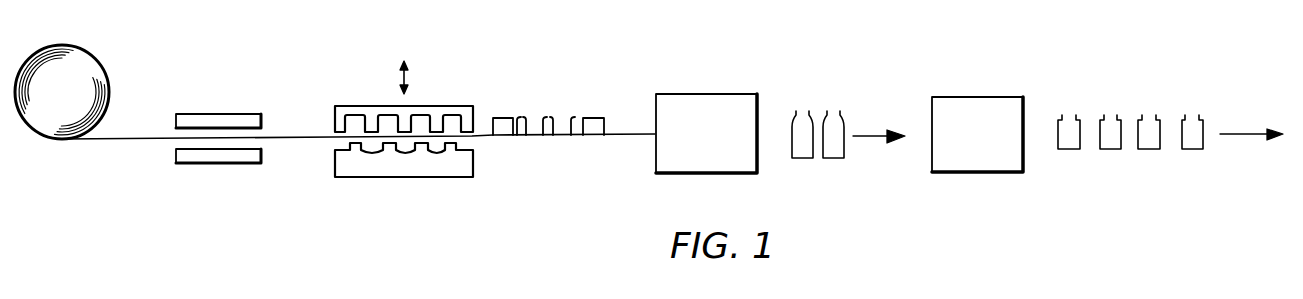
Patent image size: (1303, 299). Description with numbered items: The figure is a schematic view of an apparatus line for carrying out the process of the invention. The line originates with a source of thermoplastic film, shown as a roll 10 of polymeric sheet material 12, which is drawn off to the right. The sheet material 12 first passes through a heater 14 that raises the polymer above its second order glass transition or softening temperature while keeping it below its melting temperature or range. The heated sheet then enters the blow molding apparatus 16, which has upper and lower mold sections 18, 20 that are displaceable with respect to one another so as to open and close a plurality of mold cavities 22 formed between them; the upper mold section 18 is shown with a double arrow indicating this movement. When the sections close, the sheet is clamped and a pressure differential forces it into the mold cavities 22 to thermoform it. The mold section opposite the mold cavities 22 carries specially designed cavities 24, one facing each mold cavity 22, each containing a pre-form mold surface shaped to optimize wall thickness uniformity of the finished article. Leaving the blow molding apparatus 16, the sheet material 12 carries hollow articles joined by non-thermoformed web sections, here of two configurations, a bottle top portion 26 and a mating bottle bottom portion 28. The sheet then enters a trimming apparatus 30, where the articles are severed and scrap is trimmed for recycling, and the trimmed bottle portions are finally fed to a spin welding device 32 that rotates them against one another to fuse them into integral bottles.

The roll 10 is at (82, 65).
The polymeric sheet material 12 is at (117, 137).
The heater 14 is at (235, 115).
The blow molding apparatus 16 is at (406, 131).
The upper mold section 18 is at (340, 112).
The lower mold section 20 is at (368, 170).
The mold cavities 22 is at (420, 124).
The specially designed cavities 24 is at (419, 144).
The bottle top portion 26 is at (545, 117).
The bottle bottom portion 28 is at (517, 118).
The trimming apparatus 30 is at (707, 94).
The spin welding device 32 is at (995, 97).